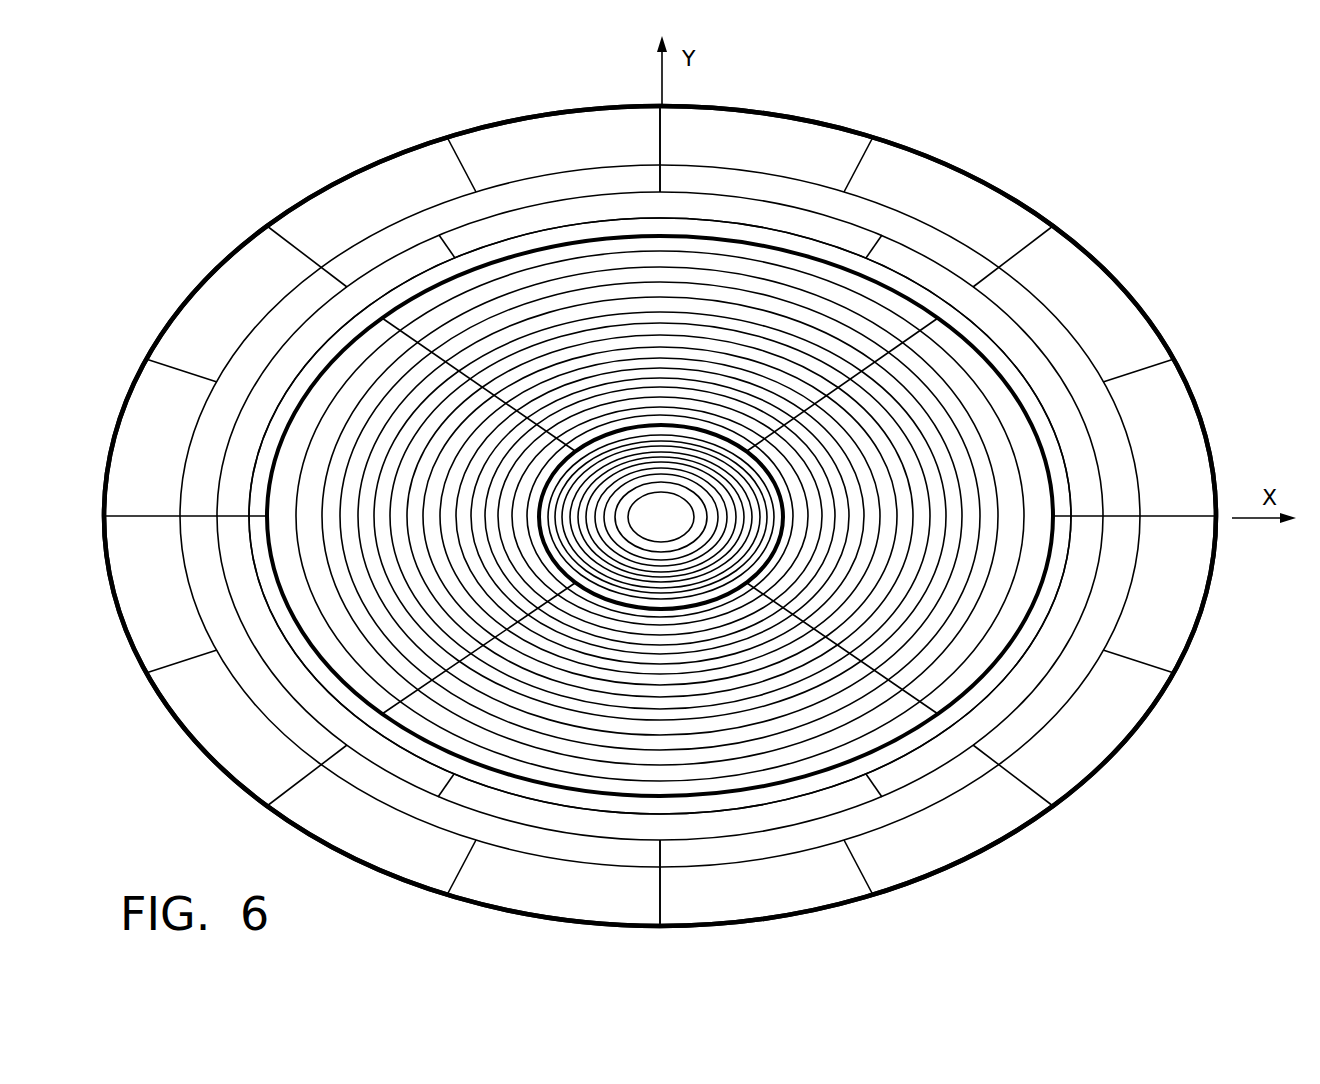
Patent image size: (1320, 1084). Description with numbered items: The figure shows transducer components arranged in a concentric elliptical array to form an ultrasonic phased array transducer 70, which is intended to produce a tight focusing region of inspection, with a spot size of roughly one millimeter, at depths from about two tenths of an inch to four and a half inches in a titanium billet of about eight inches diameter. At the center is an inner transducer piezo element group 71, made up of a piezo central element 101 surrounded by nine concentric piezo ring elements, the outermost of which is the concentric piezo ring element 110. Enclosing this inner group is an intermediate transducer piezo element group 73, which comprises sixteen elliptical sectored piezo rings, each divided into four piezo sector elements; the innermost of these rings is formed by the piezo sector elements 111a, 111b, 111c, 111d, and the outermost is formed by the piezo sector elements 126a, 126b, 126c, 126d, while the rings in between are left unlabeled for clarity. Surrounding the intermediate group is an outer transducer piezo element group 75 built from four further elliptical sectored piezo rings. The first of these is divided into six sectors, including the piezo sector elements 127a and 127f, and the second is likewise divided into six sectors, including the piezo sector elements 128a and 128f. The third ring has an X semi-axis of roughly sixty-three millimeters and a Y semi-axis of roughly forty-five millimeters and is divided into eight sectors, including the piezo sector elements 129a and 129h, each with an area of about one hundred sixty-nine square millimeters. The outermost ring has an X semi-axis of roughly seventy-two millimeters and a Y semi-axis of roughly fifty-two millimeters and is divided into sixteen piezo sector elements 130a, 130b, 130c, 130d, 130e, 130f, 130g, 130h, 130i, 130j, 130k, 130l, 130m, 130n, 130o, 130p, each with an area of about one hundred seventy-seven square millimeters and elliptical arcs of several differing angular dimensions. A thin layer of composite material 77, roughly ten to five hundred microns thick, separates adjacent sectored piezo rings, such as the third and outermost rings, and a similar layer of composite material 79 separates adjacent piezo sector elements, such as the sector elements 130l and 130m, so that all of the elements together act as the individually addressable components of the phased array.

The ultrasonic phased array transducer 70 is at (1090, 822).
The inner transducer piezo element group 71 is at (782, 556).
The intermediate transducer piezo element group 73 is at (1018, 645).
The outer transducer piezo element group 75 is at (480, 122).
The layer of composite material 77 is at (790, 858).
The layer of composite material 79 is at (660, 888).
The piezo central element 101 is at (680, 531).
The concentric piezo ring element 110 is at (772, 490).
The piezo sector element 111a is at (778, 543).
The piezo sector element 111b is at (697, 428).
The piezo sector element 111c is at (548, 468).
The piezo sector element 111d is at (611, 604).
The piezo sector element 126a is at (1038, 555).
The piezo sector element 126b is at (783, 257).
The piezo sector element 126c is at (378, 330).
The piezo sector element 126d is at (452, 747).
The piezo sector element 127a is at (1063, 495).
The piezo sector element 127f is at (1053, 582).
The piezo sector element 128a is at (1072, 428).
The piezo sector element 128f is at (1068, 623).
The piezo sector element 129a is at (1077, 368).
The piezo sector element 129h is at (1065, 687).
The piezo sector element 130a is at (1134, 476).
The piezo sector element 130b is at (1120, 334).
The piezo sector element 130c is at (989, 236).
The piezo sector element 130d is at (804, 159).
The piezo sector element 130e is at (599, 149).
The piezo sector element 130f is at (414, 173).
The piezo sector element 130g is at (277, 268).
The piezo sector element 130h is at (171, 406).
The piezo sector element 130i is at (185, 557).
The piezo sector element 130j is at (195, 690).
The piezo sector element 130k is at (321, 783).
The piezo sector element 130l is at (512, 870).
The piezo sector element 130m is at (722, 883).
The piezo sector element 130n is at (904, 858).
The piezo sector element 130o is at (1045, 761).
The piezo sector element 130p is at (1147, 623).